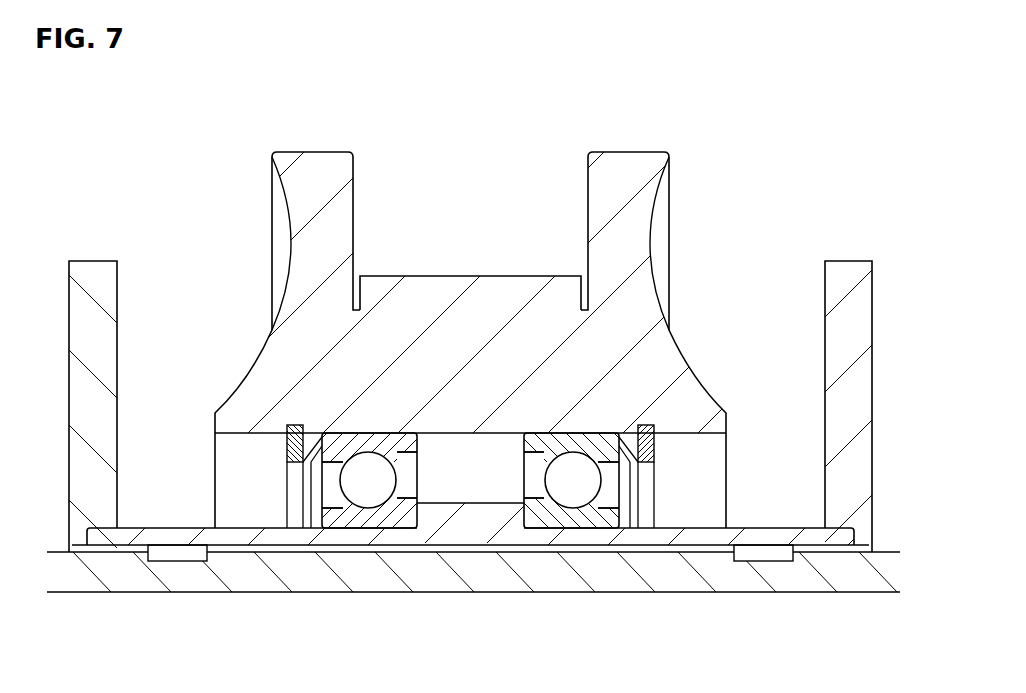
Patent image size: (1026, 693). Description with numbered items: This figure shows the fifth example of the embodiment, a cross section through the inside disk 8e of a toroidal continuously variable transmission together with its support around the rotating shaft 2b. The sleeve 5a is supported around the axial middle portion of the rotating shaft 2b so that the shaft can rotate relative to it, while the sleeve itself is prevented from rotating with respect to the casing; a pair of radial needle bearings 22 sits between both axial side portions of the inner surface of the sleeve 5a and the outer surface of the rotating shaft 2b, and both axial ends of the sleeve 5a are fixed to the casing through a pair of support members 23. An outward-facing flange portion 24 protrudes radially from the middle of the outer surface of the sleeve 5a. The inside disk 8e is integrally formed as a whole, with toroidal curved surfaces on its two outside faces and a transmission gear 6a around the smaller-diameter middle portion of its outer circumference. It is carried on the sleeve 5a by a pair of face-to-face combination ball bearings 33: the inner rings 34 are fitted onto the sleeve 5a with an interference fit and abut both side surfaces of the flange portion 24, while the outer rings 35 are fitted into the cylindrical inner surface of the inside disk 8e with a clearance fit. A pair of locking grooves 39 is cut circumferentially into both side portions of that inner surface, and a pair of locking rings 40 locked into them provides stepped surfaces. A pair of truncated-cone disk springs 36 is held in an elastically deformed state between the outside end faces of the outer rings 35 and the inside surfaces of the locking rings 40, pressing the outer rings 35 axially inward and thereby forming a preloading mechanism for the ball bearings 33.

The inside disk 8e is at (518, 168).
The transmission gear 6a is at (473, 310).
The support members 23 is at (90, 280).
The locking grooves 39 is at (278, 433).
The locking rings 40 is at (286, 448).
The disk springs 36 is at (318, 528).
The ball bearings 33 is at (385, 536).
The inner rings 34 is at (353, 528).
The outer rings 35 is at (430, 530).
The outward-facing flange portion 24 is at (480, 518).
The sleeve 5a is at (705, 546).
The radial needle bearings 22 is at (175, 556).
The rotating shaft 2b is at (826, 594).